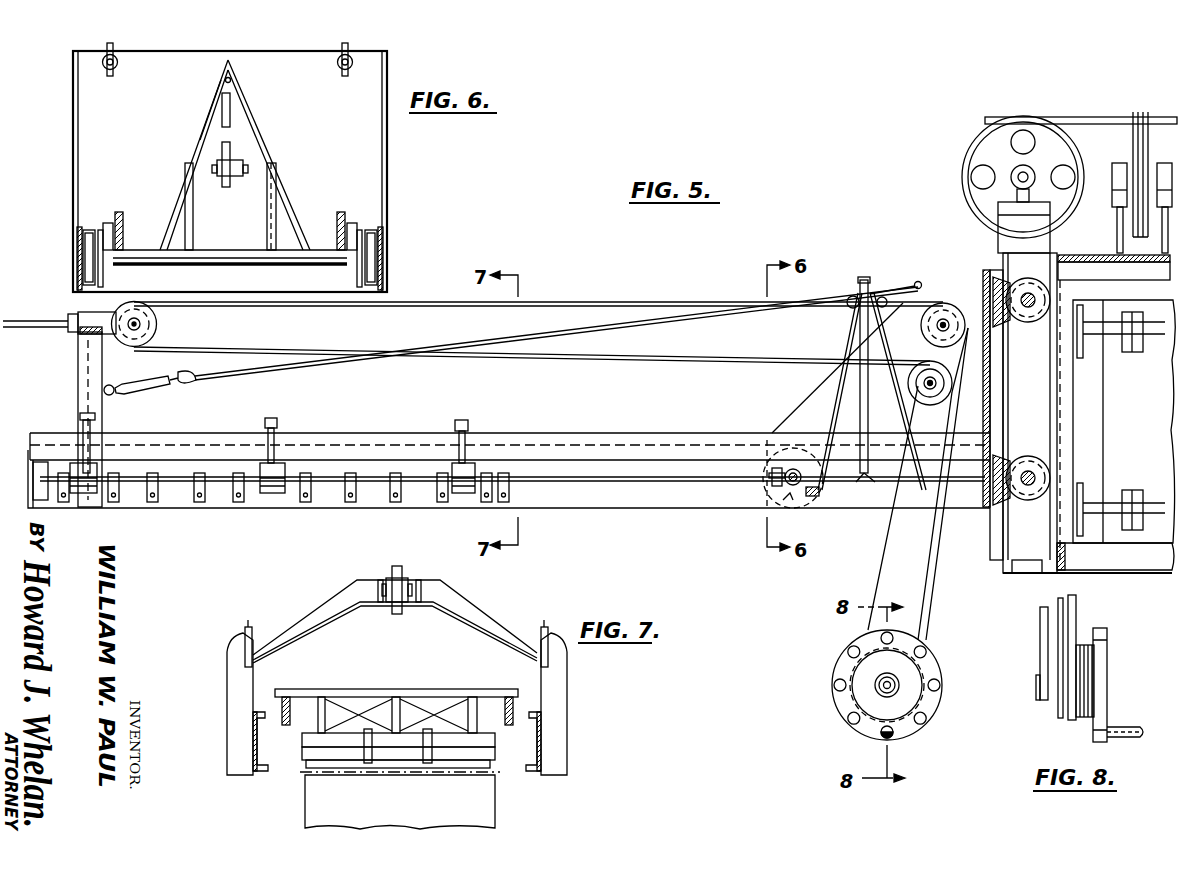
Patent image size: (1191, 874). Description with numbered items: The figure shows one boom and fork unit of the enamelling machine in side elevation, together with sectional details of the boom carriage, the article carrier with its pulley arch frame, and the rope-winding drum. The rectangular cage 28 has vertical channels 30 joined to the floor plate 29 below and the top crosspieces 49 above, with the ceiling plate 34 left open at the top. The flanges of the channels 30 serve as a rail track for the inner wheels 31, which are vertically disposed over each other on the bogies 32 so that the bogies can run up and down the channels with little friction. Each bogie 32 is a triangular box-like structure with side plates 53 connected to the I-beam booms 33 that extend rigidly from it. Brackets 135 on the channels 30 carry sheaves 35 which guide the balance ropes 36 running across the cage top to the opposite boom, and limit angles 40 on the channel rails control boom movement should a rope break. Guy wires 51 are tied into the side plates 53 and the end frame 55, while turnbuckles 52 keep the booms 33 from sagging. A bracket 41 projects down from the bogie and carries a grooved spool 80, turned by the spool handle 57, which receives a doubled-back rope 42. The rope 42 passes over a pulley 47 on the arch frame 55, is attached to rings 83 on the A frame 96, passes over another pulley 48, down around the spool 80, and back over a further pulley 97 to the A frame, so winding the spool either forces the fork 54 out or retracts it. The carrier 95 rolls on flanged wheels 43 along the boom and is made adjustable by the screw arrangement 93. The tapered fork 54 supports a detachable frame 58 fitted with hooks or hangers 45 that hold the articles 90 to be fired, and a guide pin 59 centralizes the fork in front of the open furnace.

In FIG. 5, the rectangular cage 28 is at (1152, 433).
In FIG. 5, the flooring 29 is at (1128, 578).
In FIG. 5, the channels 30 is at (1040, 403).
In FIG. 5, the inner wheels 31 is at (1073, 350).
In FIG. 5, the bogies 32 is at (996, 270).
In FIG. 5, the I-beam booms 33 is at (614, 506).
In FIG. 7, the I-beam booms 33 is at (265, 770).
In FIG. 5, the ceiling plate 34 is at (1085, 205).
In FIG. 5, the sheaves 35 is at (982, 152).
In FIG. 6, the balance ropes 36 is at (118, 58).
In FIG. 5, the balance ropes 36 is at (1135, 116).
In FIG. 5, the limit angles 40 is at (1028, 575).
In FIG. 5, the bracket 41 is at (955, 538).
In FIG. 6, the rope 42 is at (232, 80).
In FIG. 5, the rope 42 is at (582, 302).
In FIG. 7, the rope 42 is at (394, 566).
In FIG. 6, the flanged wheels 43 is at (86, 262).
In FIG. 5, the flanged wheels 43 is at (766, 515).
In FIG. 5, the hooks or hangers 45 is at (122, 503).
In FIG. 5, the pulley 47 is at (157, 326).
In FIG. 6, the pulley 48 is at (231, 186).
In FIG. 5, the pulley 48 is at (922, 401).
In FIG. 5, the top crosspieces 49 is at (1038, 250).
In FIG. 5, the guy wires 51 is at (634, 326).
In FIG. 7, the guy wires 51 is at (252, 607).
In FIG. 5, the turnbuckles 52 is at (162, 388).
In FIG. 5, the side plates 53 is at (815, 406).
In FIG. 6, the forks 54 is at (108, 214).
In FIG. 5, the forks 54 is at (642, 433).
In FIG. 7, the forks 54 is at (273, 698).
In FIG. 5, the end frame 55 is at (80, 377).
In FIG. 7, the end frame 55 is at (343, 596).
In FIG. 5, the spool handle 57 is at (895, 732).
In FIG. 8, the spool handle 57 is at (1125, 726).
In FIG. 5, the frame 58 is at (82, 415).
In FIG. 7, the frame 58 is at (382, 692).
In FIG. 5, the guide pin 59 is at (14, 330).
In FIG. 5, the grooved spool 80 is at (940, 668).
In FIG. 8, the grooved spool 80 is at (1108, 652).
In FIG. 5, the rings 83 is at (874, 280).
In FIG. 7, the articles 90 is at (484, 819).
In FIG. 5, the screw arrangement 93 is at (770, 480).
In FIG. 5, the carrier 95 is at (820, 493).
In FIG. 6, the A frame 96 is at (246, 110).
In FIG. 5, the A frame 96 is at (859, 332).
In FIG. 6, the pulley 97 is at (218, 92).
In FIG. 5, the pulley 97 is at (921, 286).
In FIG. 5, the brackets 135 is at (973, 172).